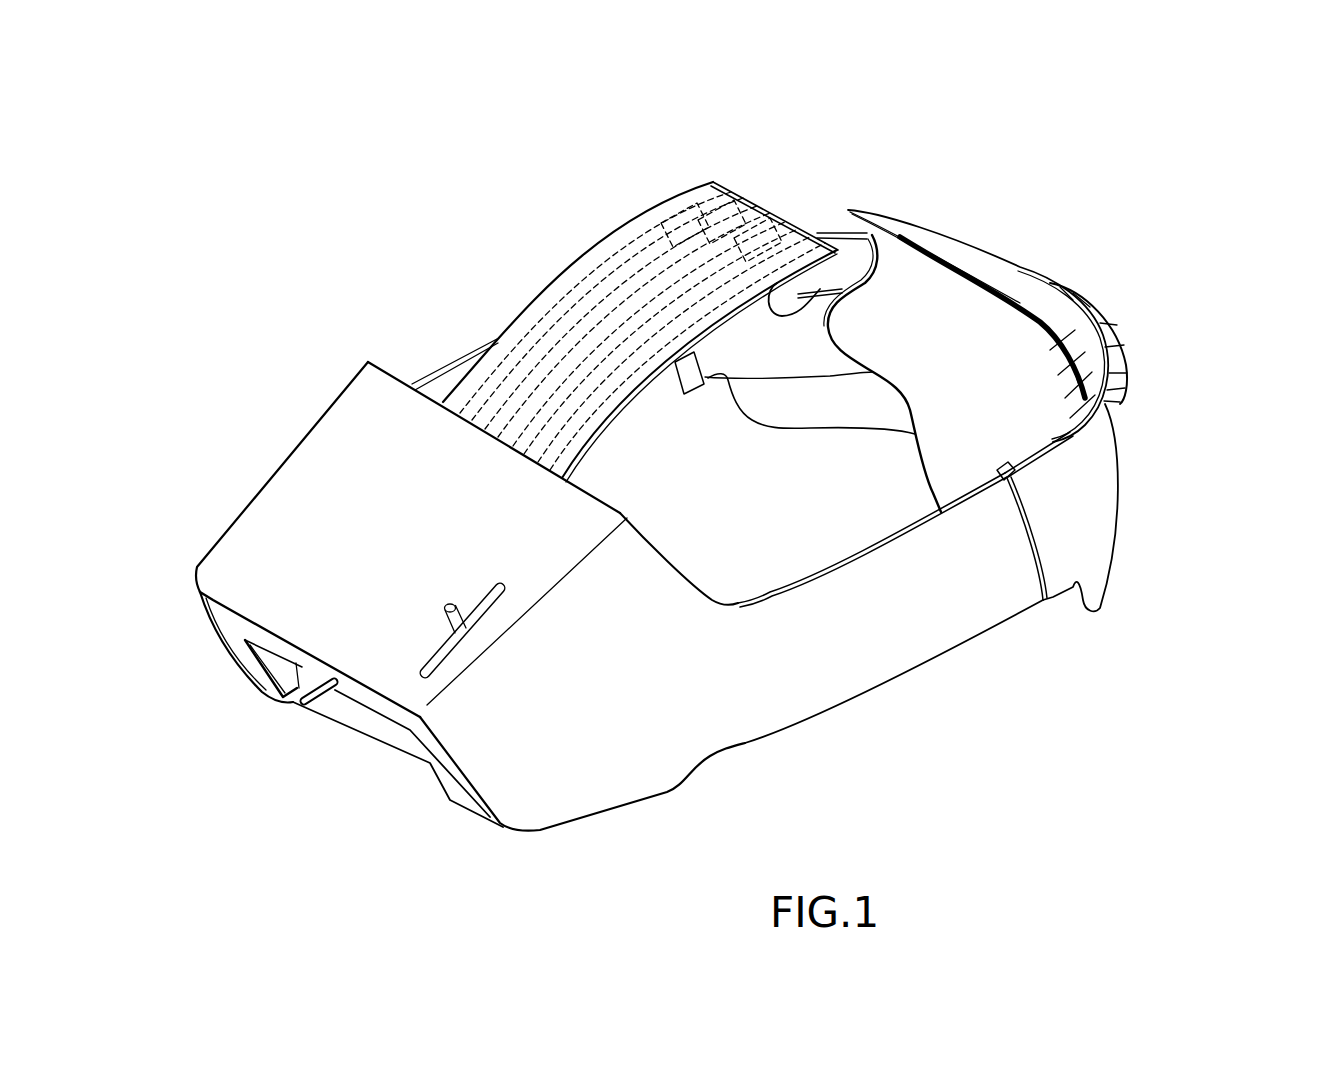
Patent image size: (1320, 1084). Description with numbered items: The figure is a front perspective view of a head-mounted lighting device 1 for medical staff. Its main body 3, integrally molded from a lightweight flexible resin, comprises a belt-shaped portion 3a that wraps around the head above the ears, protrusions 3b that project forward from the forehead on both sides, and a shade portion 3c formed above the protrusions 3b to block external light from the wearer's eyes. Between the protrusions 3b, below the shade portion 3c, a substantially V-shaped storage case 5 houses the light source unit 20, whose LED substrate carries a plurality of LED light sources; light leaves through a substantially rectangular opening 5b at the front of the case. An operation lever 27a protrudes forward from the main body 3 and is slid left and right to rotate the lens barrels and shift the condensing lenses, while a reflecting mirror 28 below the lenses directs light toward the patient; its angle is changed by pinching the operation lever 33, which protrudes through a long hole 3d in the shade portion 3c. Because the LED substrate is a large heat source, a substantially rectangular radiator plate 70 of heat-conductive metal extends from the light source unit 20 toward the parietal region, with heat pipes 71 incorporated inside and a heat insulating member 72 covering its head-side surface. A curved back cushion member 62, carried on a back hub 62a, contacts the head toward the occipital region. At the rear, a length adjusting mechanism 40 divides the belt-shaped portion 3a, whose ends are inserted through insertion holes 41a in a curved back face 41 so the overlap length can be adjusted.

The lighting device 1 is at (959, 144).
The main body 3 is at (733, 738).
The belt-shaped portion 3a is at (434, 385).
The protrusion 3b is at (553, 775).
The shade portion 3c is at (305, 490).
The long hole 3d is at (488, 590).
The storage case 5 is at (246, 672).
The opening 5b is at (267, 695).
The light source unit 20 is at (347, 735).
The lens barrel rotation operation member (operation lever) 27a is at (306, 705).
The reflecting mirror 28 is at (390, 731).
The rotation operating member (operation lever) 33 is at (462, 630).
The length adjusting mechanism 40 is at (1092, 266).
The back face 41 is at (1093, 528).
The insertion hole 41a is at (668, 393).
The back cushion member 62 is at (907, 275).
The back hub 62a is at (962, 257).
The radiator plate 70 is at (596, 262).
The heat pipe 71 is at (752, 222).
The heat insulating member 72 is at (797, 300).